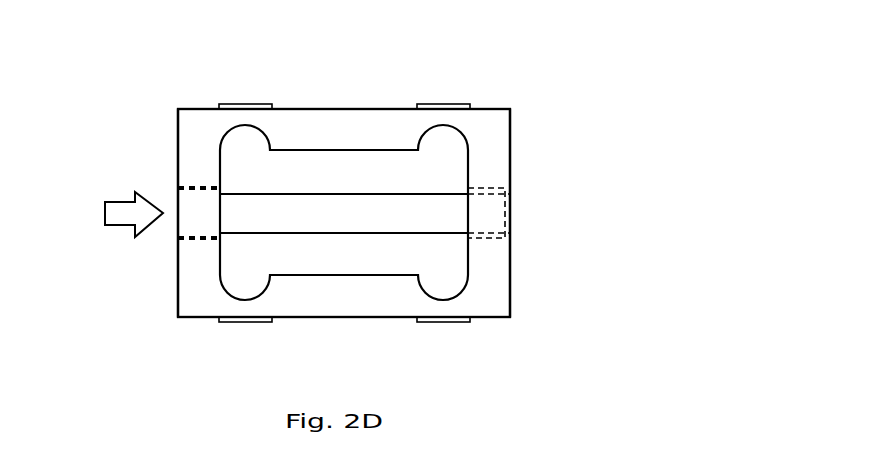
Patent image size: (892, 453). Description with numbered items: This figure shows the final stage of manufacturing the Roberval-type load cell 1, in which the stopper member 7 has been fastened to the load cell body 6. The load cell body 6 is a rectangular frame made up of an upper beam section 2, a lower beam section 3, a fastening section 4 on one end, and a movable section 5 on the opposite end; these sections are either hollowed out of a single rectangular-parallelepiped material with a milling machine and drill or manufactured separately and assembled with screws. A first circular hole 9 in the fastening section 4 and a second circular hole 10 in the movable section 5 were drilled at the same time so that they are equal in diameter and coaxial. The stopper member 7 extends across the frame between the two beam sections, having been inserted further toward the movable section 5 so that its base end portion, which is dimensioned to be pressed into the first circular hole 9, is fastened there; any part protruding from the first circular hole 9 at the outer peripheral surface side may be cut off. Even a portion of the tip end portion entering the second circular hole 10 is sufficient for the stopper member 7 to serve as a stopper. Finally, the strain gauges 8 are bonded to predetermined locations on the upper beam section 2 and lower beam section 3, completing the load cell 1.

The load cell 1 is at (575, 90).
The upper beam section 2 is at (333, 118).
The lower beam section 3 is at (343, 305).
The fastening section 4 is at (205, 144).
The movable section 5 is at (511, 143).
The load cell body 6 is at (495, 109).
The stopper member 7 is at (413, 222).
The strain gauges 8 is at (240, 104).
The first circular hole 9 is at (216, 240).
The second circular hole 10 is at (493, 184).